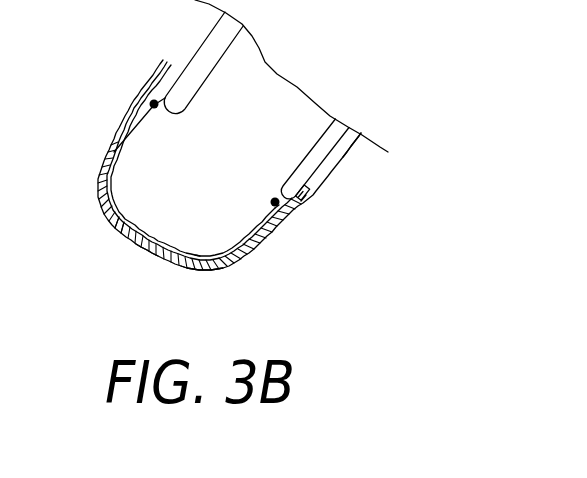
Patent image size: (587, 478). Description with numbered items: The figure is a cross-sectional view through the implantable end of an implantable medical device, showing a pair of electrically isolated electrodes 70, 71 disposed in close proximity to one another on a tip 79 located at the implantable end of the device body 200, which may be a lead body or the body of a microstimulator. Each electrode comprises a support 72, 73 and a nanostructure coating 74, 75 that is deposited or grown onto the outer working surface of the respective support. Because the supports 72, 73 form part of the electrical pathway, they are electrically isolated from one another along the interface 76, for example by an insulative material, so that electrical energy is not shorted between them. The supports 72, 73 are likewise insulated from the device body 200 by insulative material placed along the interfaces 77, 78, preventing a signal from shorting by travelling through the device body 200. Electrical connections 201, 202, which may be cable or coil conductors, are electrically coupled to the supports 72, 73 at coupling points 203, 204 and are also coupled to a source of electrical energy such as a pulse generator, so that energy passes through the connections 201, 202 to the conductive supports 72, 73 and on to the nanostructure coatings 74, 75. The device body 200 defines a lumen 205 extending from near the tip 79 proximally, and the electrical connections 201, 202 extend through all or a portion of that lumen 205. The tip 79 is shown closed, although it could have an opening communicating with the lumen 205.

The electrode 70 is at (96, 95).
The electrode 71 is at (276, 260).
The support 72 is at (117, 152).
The support 73 is at (253, 230).
The nanostructure coating 74 is at (102, 162).
The nanostructure coating 75 is at (204, 272).
The interface 76 is at (121, 248).
The interface 77 is at (175, 71).
The interface 78 is at (303, 187).
The tip 79 is at (146, 265).
The device body 200 is at (356, 157).
The electrical connection 201 is at (207, 77).
The electrical connection 202 is at (310, 150).
The coupling point 203 is at (156, 108).
The coupling point 204 is at (274, 198).
The lumen 205 is at (302, 104).